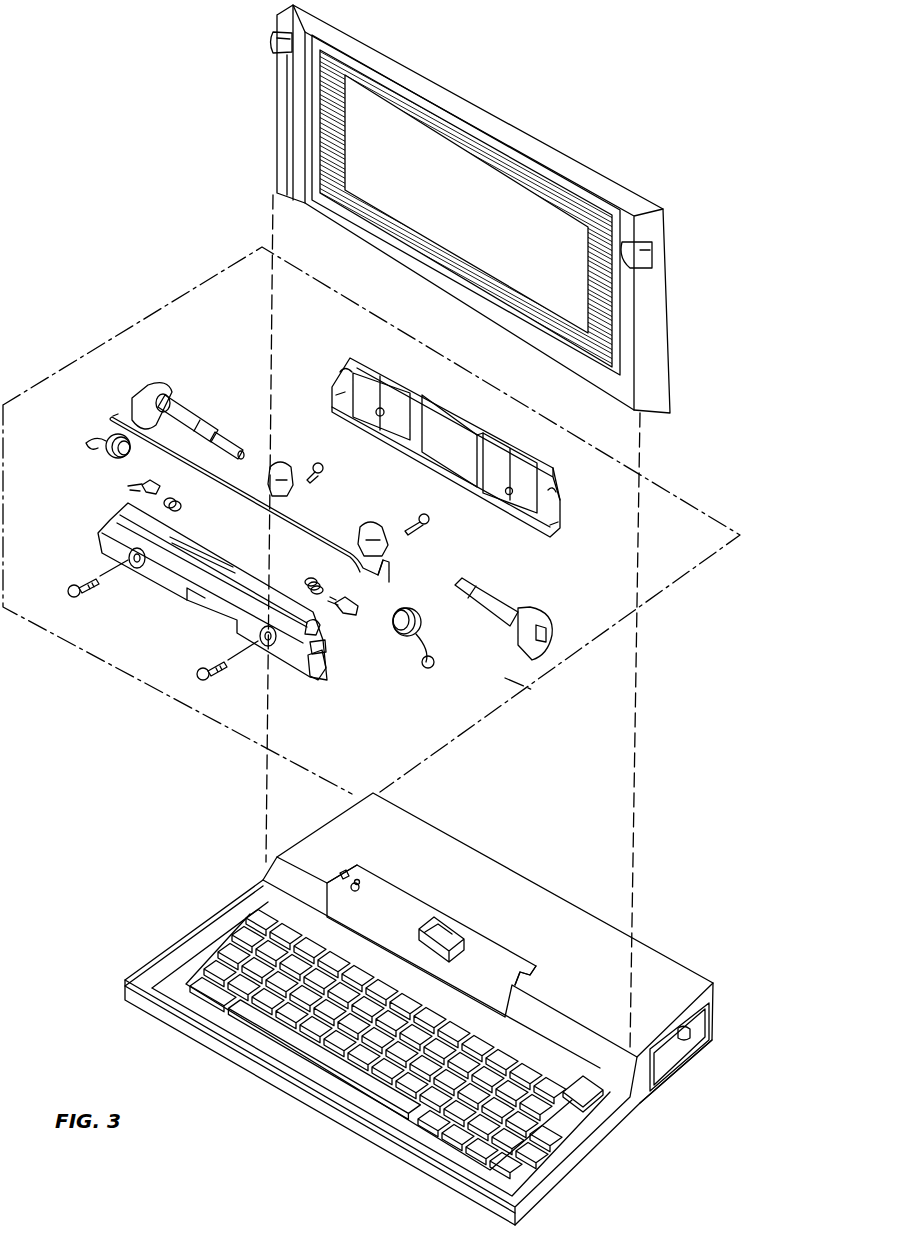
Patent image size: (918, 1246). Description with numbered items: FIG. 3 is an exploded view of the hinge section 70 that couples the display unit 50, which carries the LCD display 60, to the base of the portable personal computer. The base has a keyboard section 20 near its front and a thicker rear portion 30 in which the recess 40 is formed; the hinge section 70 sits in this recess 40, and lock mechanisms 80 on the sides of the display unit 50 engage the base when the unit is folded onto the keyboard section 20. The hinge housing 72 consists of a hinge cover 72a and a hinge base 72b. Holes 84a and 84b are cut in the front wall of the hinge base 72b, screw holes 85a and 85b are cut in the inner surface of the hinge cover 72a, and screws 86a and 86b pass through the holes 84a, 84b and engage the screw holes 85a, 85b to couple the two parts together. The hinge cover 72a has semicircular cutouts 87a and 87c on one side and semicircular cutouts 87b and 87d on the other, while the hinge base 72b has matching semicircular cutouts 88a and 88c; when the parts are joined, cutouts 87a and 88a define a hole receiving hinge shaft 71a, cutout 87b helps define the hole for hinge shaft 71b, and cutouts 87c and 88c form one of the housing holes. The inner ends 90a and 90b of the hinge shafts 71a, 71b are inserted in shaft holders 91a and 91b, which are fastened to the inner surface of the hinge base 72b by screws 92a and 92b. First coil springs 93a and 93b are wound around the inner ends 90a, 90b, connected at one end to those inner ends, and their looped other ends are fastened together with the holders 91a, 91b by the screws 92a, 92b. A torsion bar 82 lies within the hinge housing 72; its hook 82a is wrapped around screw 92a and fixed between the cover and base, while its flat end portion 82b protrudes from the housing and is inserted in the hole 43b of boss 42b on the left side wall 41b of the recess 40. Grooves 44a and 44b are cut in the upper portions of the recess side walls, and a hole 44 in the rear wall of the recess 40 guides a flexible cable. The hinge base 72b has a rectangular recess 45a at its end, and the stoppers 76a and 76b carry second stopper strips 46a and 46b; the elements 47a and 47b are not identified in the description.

The keyboard section 20 is at (255, 960).
The rear portion 30 is at (419, 1009).
The recess 40 is at (456, 957).
The side wall 41b is at (333, 893).
The boss 42b is at (360, 878).
The hole 43b is at (360, 886).
The hole 44 is at (455, 930).
The groove 44a is at (532, 978).
The groove 44b is at (343, 870).
The rectangular recess 45a is at (322, 682).
The second stopper strip 46a is at (345, 598).
The second stopper strip 46b is at (160, 486).
The detent spring 47a is at (310, 577).
The detent spring 47b is at (182, 503).
The display unit 50 is at (469, 209).
The LCD display 60 is at (470, 165).
The hinge section 70 is at (532, 690).
The hinge shaft 71a is at (503, 610).
The hinge shaft 71b is at (165, 392).
The hinge housing 72 is at (403, 438).
The hinge cover 72a is at (487, 432).
The hinge base 72b is at (252, 608).
The stopper 76a is at (356, 608).
The stopper 76b is at (136, 488).
The lock mechanism 80 is at (270, 42).
The torsion bar 82 is at (259, 475).
The hook 82a is at (390, 569).
The flat end portion 82b is at (130, 422).
The hole 84a is at (270, 648).
The hole 84b is at (135, 570).
The screw hole 85a is at (510, 496).
The screw hole 85b is at (378, 420).
The screw 86a is at (196, 668).
The screw 86b is at (74, 584).
The semicircular cutout 87a is at (556, 488).
The semicircular cutout 87b is at (343, 376).
The semicircular cutout 87c is at (560, 524).
The semicircular cutout 87d is at (338, 398).
The semicircular cutout 88a is at (320, 630).
The semicircular cutout 88c is at (330, 668).
The inner end 90a is at (460, 580).
The inner end 90b is at (238, 450).
The shaft holder 91a is at (370, 523).
The shaft holder 91b is at (284, 465).
The screw 92a is at (430, 518).
The screw 92b is at (318, 475).
The first coil spring 93a is at (422, 622).
The first coil spring 93b is at (105, 436).